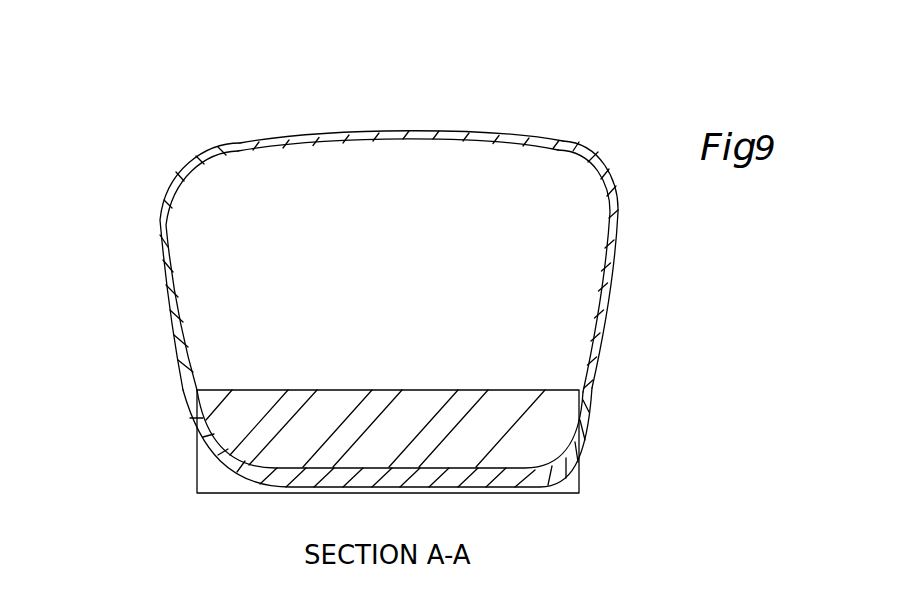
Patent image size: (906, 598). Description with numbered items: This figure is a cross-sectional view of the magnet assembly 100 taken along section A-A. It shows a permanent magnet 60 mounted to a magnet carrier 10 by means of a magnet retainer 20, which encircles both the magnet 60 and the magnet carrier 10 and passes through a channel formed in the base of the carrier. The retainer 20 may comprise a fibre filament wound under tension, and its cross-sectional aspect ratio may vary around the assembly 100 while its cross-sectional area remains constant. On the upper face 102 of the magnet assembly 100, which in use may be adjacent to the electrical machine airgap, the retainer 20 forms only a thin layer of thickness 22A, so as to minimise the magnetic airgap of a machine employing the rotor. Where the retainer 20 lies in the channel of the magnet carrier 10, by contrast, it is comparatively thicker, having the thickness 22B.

The magnet assembly 100 is at (643, 309).
The permanent magnet 60 is at (213, 243).
The upper face 102 is at (330, 134).
The thickness 22A is at (420, 163).
The magnet retainer 20 is at (193, 387).
The thickness 22B is at (372, 510).
The magnet carrier 10 is at (245, 415).